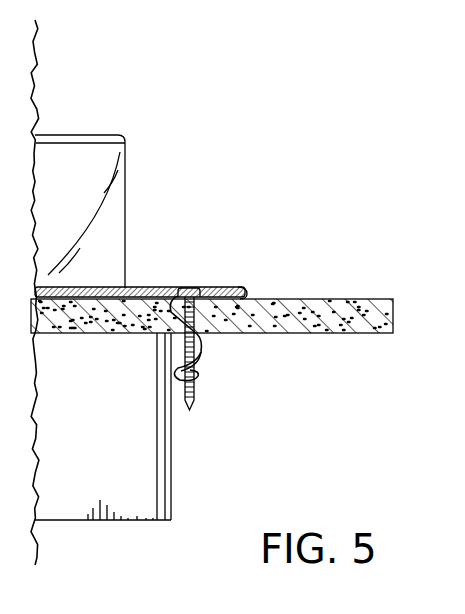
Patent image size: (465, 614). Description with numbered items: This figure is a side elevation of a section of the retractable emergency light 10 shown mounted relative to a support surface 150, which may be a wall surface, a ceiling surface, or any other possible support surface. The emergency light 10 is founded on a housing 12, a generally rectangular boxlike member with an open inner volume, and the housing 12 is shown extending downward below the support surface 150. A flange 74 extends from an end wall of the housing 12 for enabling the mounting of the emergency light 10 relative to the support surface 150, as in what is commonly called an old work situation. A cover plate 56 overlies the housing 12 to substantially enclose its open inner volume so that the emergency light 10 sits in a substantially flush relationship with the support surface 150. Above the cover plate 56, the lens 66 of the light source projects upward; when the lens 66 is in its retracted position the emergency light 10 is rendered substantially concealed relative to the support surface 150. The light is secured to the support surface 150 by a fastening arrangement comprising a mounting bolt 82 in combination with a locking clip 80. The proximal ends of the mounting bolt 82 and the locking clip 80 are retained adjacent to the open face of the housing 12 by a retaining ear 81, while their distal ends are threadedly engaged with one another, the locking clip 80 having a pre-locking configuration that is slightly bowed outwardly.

The retractable emergency light 10 is at (247, 104).
The housing 12 is at (171, 470).
The cover plate 56 is at (155, 288).
The lens 66 is at (82, 135).
The flange 74 is at (248, 300).
The locking clip 80 is at (206, 340).
The retaining ear 81 is at (207, 296).
The mounting bolt 82 is at (208, 385).
The support surface 150 is at (335, 300).